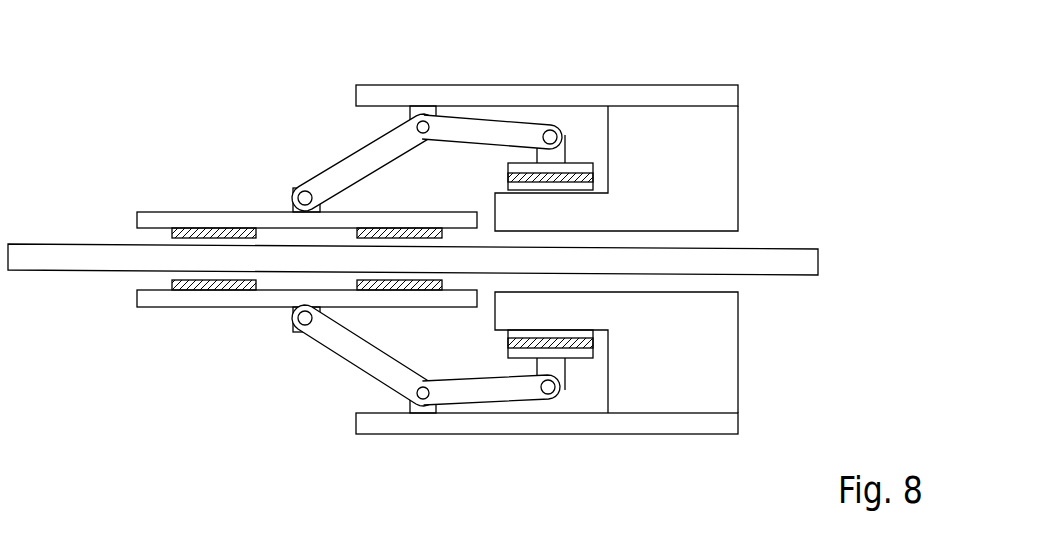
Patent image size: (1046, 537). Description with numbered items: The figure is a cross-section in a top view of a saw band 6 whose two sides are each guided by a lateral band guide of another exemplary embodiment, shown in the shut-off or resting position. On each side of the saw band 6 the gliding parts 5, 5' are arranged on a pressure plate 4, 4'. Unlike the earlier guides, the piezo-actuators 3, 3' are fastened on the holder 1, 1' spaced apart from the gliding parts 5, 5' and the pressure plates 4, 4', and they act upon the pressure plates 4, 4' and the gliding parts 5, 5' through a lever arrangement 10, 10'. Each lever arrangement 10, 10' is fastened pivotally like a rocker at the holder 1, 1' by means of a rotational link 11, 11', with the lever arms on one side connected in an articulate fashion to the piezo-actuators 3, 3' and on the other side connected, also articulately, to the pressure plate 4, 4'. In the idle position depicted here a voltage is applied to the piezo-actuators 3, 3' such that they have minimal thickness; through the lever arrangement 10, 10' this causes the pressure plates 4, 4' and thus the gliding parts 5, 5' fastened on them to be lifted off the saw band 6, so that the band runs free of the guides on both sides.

The holder 1 is at (593, 151).
The holder 1' is at (587, 363).
The piezo-actuator 3 is at (576, 103).
The piezo-actuator 3' is at (567, 416).
The pressure plate 4 is at (307, 152).
The pressure plate 4' is at (284, 360).
The gliding parts 5 is at (301, 165).
The gliding parts 5' is at (301, 359).
The saw band 6 is at (783, 262).
The lever arrangement 10 is at (424, 112).
The lever arrangement 10' is at (424, 397).
The rotational link 11 is at (454, 68).
The rotational link 11' is at (433, 447).